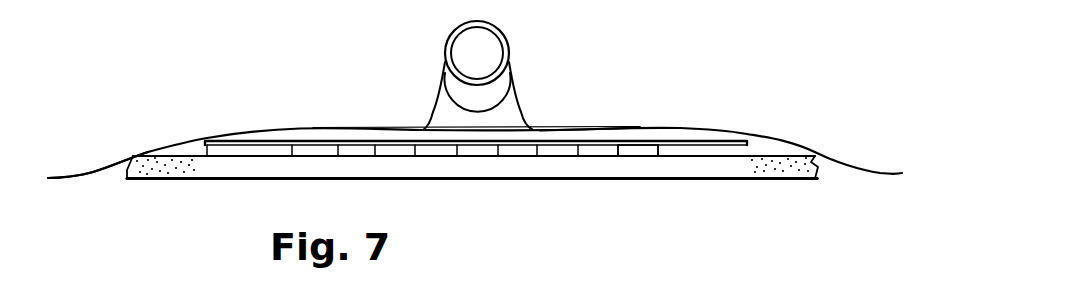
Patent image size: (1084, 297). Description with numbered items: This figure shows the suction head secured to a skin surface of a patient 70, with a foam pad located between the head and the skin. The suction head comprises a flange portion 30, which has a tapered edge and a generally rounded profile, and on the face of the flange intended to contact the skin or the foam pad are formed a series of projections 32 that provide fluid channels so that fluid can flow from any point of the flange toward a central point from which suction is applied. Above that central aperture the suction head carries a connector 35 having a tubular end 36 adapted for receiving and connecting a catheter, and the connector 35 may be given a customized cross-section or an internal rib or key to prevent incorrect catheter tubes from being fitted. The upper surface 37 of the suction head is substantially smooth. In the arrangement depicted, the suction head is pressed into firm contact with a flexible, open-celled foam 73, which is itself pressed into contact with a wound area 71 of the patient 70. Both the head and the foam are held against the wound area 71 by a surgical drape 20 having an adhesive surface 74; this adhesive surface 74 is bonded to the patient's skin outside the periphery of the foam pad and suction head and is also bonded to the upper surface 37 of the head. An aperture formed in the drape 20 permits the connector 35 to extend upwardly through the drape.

The surgical drape 20 is at (175, 142).
The flange portion 30 is at (590, 129).
The projections 32 is at (638, 150).
The connector 35 is at (507, 115).
The tubular end 36 is at (505, 37).
The upper surface 37 is at (247, 148).
The patient 70 is at (490, 240).
The wound area 71 is at (553, 181).
The open-celled foam 73 is at (783, 181).
The adhesive surface 74 is at (100, 172).